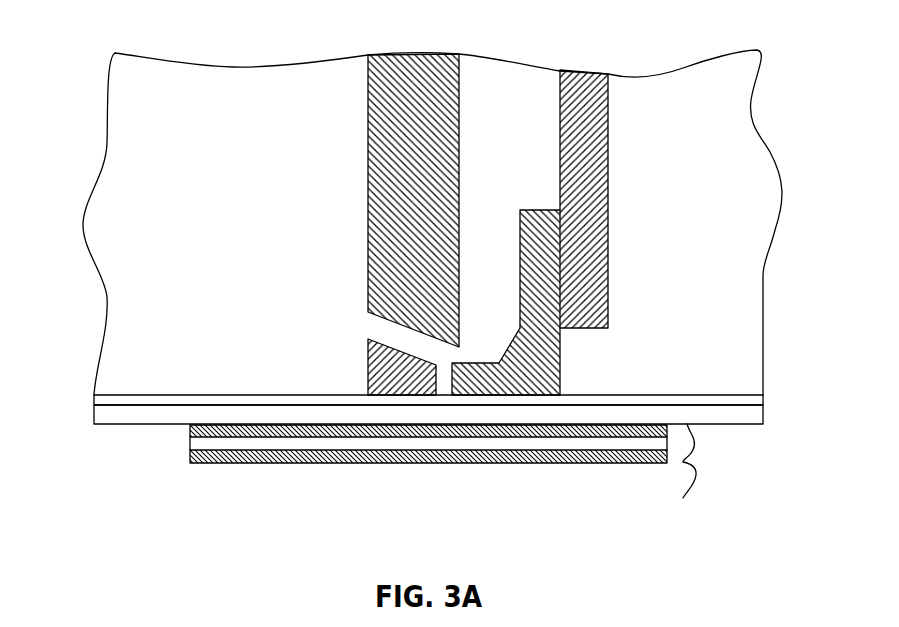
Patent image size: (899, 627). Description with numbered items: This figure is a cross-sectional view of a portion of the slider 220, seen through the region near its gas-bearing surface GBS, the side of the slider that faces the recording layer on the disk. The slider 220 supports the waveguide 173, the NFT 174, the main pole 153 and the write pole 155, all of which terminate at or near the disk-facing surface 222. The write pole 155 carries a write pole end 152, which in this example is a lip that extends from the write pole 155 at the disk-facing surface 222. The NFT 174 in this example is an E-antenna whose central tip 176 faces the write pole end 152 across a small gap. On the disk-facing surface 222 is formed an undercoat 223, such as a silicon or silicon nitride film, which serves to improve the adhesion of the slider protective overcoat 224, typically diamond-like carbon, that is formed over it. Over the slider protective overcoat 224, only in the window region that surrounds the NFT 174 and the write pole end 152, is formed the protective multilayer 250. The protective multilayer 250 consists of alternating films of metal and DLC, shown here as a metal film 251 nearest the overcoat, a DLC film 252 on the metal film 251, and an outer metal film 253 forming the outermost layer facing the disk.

The slider 220 is at (120, 126).
The waveguide 173 is at (384, 140).
The NFT 174 is at (367, 365).
The main pole 153 is at (565, 135).
The write pole 155 is at (535, 218).
The write pole end 152 is at (472, 378).
The central tip 176 is at (437, 383).
The disk-facing surface 222 is at (94, 397).
The undercoat 223 is at (94, 404).
The slider protective overcoat 224 is at (90, 423).
The gas-bearing surface GBS is at (108, 428).
The protective multilayer 250 is at (410, 482).
The metal film 251 is at (190, 430).
The DLC film 252 is at (190, 448).
The outer metal film 253 is at (190, 463).